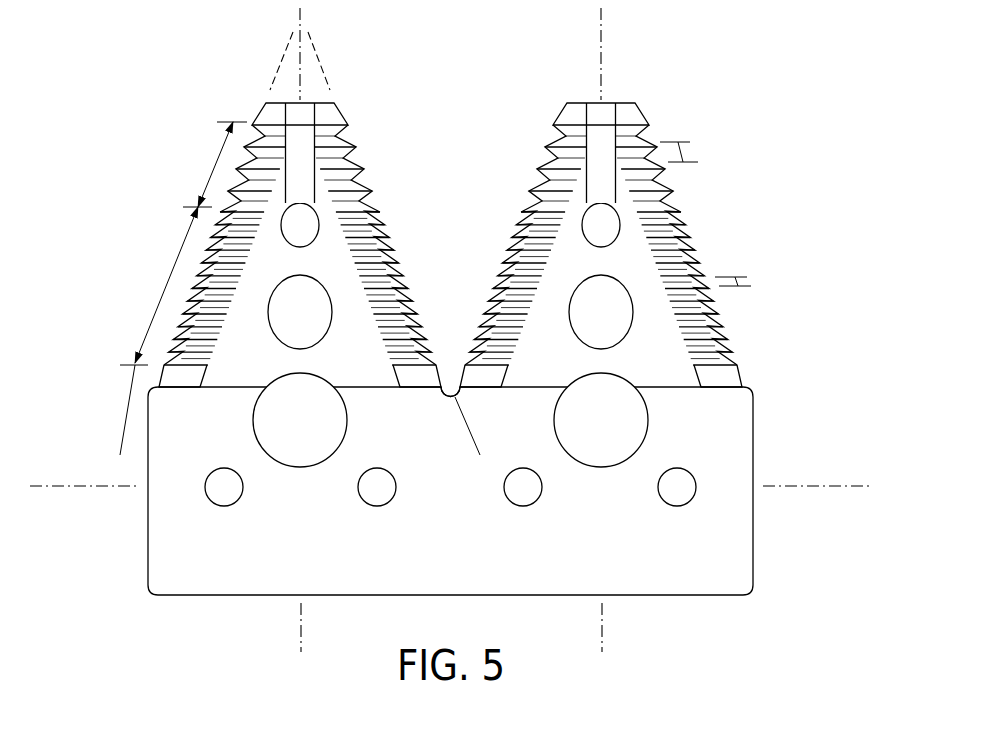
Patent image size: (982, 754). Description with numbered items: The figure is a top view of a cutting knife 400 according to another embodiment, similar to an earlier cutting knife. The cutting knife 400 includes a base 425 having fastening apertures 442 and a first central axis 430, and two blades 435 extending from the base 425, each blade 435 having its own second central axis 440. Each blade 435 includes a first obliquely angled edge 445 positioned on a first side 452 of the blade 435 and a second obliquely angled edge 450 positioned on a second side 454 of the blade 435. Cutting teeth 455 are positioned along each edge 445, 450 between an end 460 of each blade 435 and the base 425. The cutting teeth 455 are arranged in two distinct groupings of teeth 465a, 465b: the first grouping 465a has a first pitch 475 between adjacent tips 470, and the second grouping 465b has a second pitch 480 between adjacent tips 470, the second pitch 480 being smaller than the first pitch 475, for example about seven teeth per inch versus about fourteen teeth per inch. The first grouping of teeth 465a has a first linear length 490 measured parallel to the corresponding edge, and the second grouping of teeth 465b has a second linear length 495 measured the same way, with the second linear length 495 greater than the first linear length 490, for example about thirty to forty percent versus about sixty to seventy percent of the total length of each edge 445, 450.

The cutting knife 400 is at (830, 52).
The base 425 is at (722, 597).
The first central axis 430 is at (820, 482).
The blade 435 is at (307, 140).
The second central axis 440 is at (300, 636).
The fastening apertures 442 is at (207, 502).
The first obliquely angled edge 445 is at (132, 428).
The second obliquely angled edge 450 is at (468, 425).
The first side 452 is at (147, 142).
The second side 454 is at (403, 142).
The cutting teeth 455 is at (410, 227).
The end 460 is at (270, 101).
The first grouping of teeth 465a is at (175, 159).
The second grouping of teeth 465b is at (110, 317).
The tips 470 is at (518, 212).
The first pitch 475 is at (685, 152).
The second pitch 480 is at (748, 279).
The first linear length 490 is at (224, 143).
The second linear length 495 is at (163, 293).